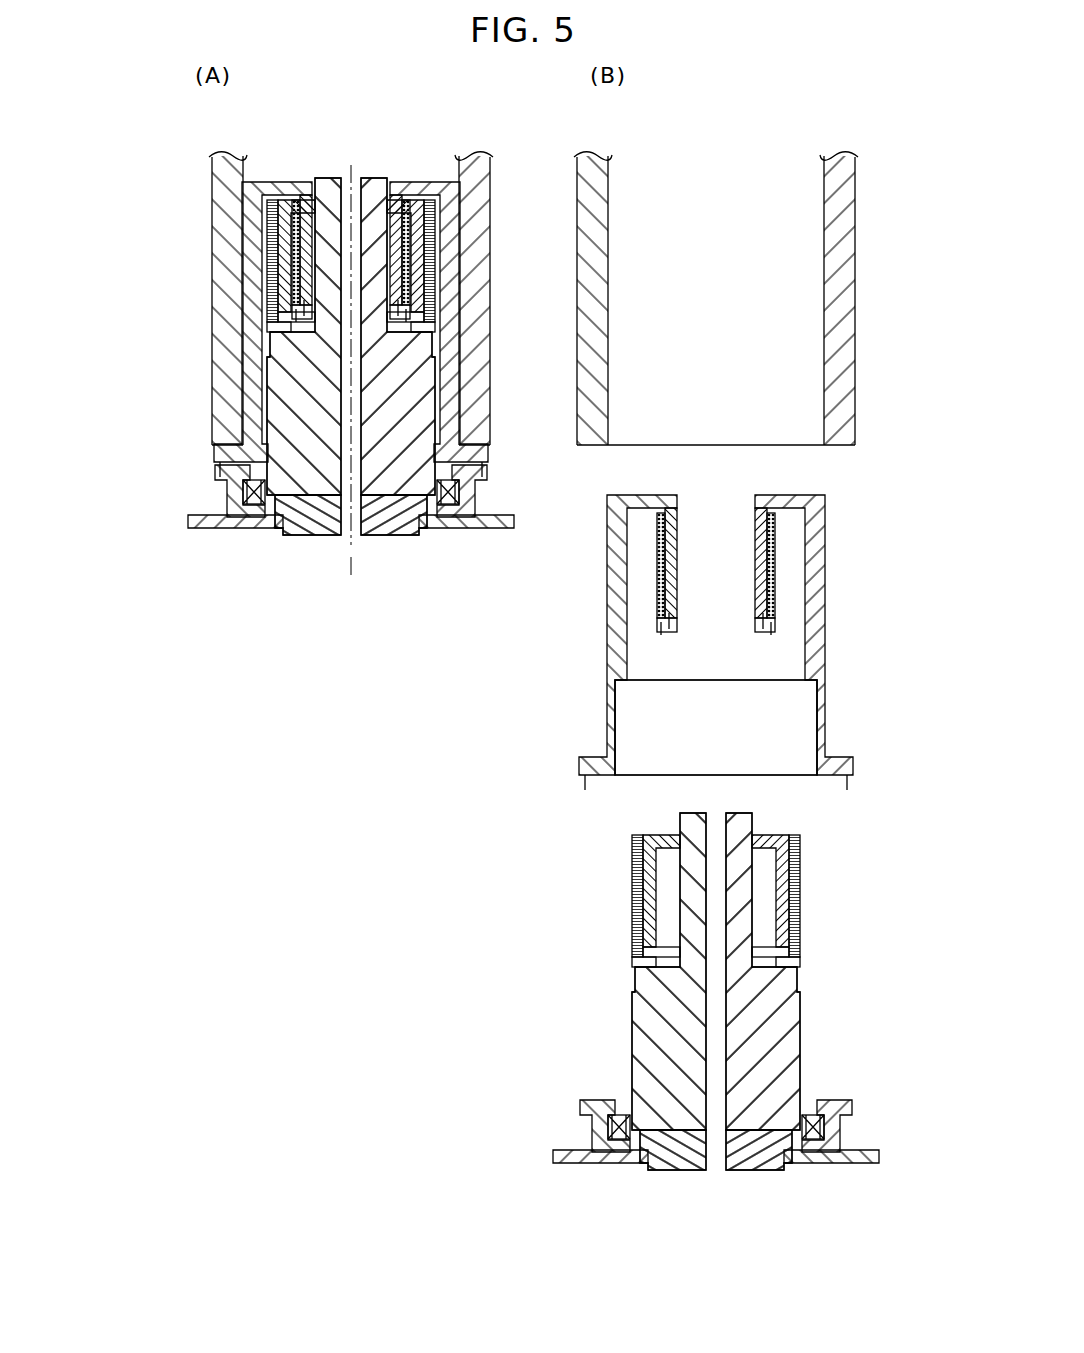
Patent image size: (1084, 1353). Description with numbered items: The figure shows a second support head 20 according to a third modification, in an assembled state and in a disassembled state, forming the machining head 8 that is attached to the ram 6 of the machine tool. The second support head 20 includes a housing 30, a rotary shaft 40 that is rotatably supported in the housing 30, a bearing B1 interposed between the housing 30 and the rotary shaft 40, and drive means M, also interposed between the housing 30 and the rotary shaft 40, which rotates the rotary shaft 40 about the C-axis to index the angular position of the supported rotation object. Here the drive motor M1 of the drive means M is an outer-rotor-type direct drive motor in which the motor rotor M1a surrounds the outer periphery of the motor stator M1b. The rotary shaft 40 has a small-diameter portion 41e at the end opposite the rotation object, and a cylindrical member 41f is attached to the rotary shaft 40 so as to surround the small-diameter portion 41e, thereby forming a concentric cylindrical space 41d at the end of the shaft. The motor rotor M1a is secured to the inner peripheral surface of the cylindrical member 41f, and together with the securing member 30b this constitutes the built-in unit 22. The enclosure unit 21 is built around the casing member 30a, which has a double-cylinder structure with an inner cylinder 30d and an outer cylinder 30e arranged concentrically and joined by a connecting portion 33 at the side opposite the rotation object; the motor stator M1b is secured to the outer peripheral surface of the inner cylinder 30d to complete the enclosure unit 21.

The ram 6 is at (843, 285).
The machining head 8 is at (358, 176).
The second support head 20 is at (381, 177).
The housing 30 is at (243, 218).
The drive means M is at (282, 270).
The drive motor M1 is at (272, 300).
The rotary shaft 40 is at (264, 418).
The enclosure unit 21 is at (596, 661).
The built-in unit 22 is at (617, 979).
The connecting portion 33 is at (787, 503).
The casing member 30a is at (607, 702).
The securing member 30b is at (580, 1102).
The inner cylinder 30d is at (762, 553).
The outer cylinder 30e is at (827, 583).
The motor rotor M1a is at (653, 897).
The motor stator M1b is at (778, 607).
The cylindrical space 41d is at (762, 842).
The small-diameter portion 41e is at (745, 835).
The cylindrical member 41f is at (798, 883).
The bearing B1 is at (618, 1138).